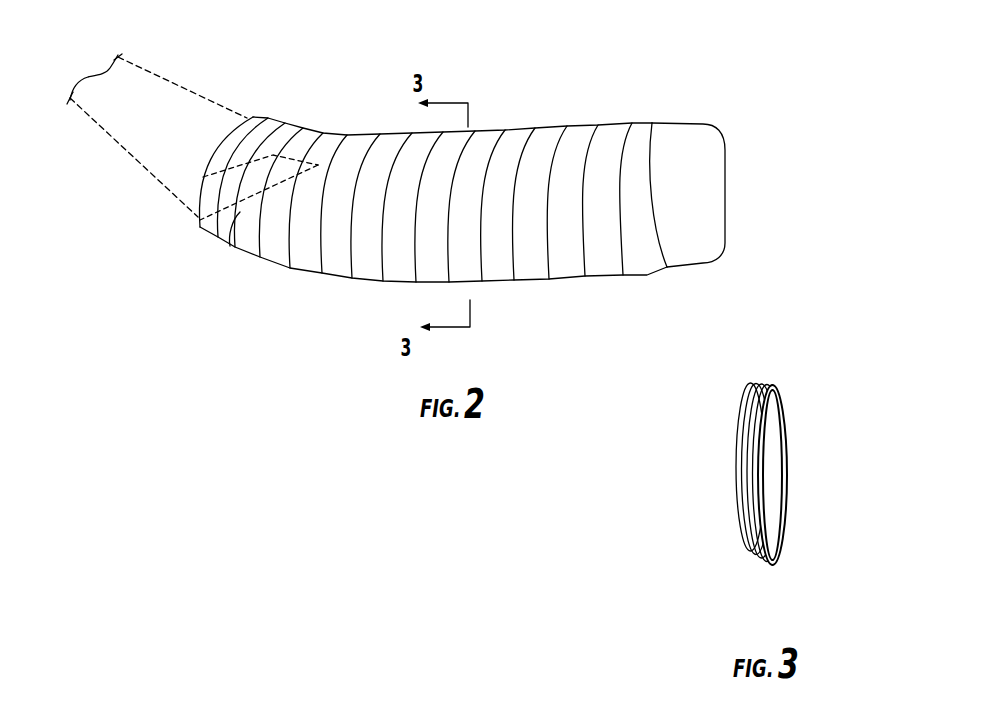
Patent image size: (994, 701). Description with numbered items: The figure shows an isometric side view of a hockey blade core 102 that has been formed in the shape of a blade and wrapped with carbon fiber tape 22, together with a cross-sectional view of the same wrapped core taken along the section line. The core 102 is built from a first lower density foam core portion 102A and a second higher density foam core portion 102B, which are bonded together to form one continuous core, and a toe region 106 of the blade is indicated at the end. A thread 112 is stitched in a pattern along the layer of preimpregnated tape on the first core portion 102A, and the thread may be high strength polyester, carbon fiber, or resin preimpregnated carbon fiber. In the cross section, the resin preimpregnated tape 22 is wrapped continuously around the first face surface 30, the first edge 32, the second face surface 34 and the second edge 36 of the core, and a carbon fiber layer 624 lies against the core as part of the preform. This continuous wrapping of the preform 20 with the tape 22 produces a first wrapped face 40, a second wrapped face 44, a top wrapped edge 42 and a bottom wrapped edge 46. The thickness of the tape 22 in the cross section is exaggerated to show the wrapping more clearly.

In FIG. 2, the preform 20 is at (198, 120).
In FIG. 3, the preform 20 is at (773, 503).
In FIG. 2, the core 102 is at (370, 187).
In FIG. 2, the first core portion 102A is at (692, 146).
In FIG. 3, the first core portion 102A is at (767, 430).
In FIG. 2, the second core portion 102B is at (676, 240).
In FIG. 3, the second core portion 102B is at (763, 517).
In FIG. 2, the toe region 106 is at (710, 228).
In FIG. 2, the thread 112 is at (222, 233).
In FIG. 2, the carbon fiber tape 22 is at (535, 147).
In FIG. 3, the carbon fiber tape 22 is at (773, 400).
In FIG. 2, the top wrapped edge 42 is at (498, 130).
In FIG. 3, the top wrapped edge 42 is at (763, 388).
In FIG. 2, the bottom wrapped edge 46 is at (498, 285).
In FIG. 3, the bottom wrapped edge 46 is at (773, 567).
In FIG. 2, the first wrapped face 40 is at (370, 222).
In FIG. 3, the first wrapped face 40 is at (757, 480).
In FIG. 3, the first face surface 30 is at (757, 437).
In FIG. 3, the first edge 32 is at (770, 388).
In FIG. 3, the second face surface 34 is at (783, 463).
In FIG. 3, the second edge 36 is at (777, 562).
In FIG. 3, the second wrapped face 44 is at (777, 421).
In FIG. 3, the carbon fiber layer 624 is at (783, 484).